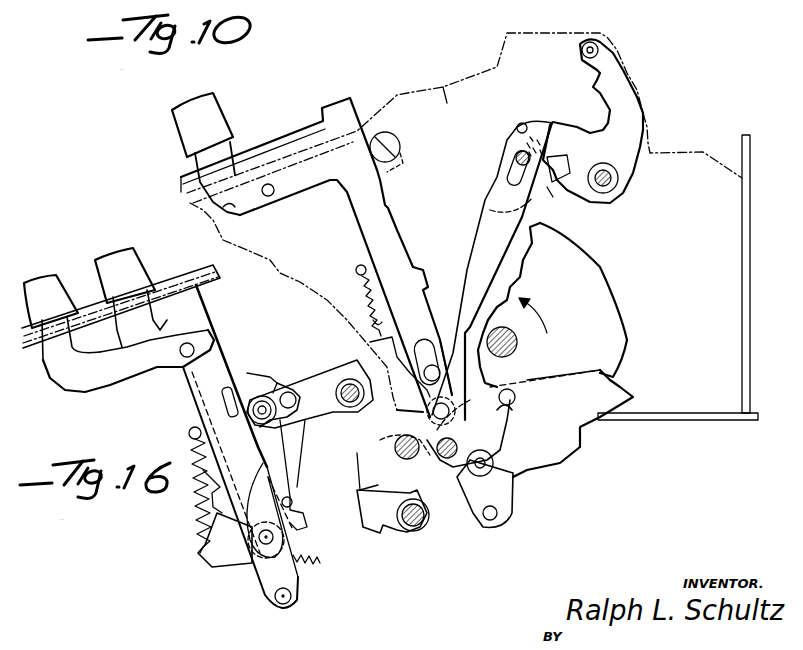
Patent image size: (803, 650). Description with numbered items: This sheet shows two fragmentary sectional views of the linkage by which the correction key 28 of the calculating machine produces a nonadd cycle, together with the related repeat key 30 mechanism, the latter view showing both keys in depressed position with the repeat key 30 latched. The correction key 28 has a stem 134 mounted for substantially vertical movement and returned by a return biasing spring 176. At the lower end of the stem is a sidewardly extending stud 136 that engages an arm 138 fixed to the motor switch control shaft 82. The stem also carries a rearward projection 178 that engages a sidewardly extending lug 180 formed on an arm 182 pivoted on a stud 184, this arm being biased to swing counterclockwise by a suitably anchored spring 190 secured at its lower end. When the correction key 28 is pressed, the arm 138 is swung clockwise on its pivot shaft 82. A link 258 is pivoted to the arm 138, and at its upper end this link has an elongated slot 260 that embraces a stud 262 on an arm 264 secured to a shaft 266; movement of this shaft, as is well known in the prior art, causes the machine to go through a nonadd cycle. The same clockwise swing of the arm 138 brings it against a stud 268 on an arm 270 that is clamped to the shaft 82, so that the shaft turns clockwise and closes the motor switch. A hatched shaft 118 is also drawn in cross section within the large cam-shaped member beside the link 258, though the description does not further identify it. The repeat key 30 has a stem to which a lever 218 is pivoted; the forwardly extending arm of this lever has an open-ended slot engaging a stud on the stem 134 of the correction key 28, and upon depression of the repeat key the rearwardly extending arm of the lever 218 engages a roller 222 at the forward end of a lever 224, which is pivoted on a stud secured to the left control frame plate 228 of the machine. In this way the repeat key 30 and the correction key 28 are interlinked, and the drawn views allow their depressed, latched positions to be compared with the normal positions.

In FIG. 10, the correction key 28 is at (215, 110).
In FIG. 16, the correction key 28 is at (50, 283).
In FIG. 16, the repeat key 30 is at (145, 268).
In FIG. 10, the motor switch control shaft 82 is at (400, 440).
In FIG. 10, the shaft 118 is at (518, 342).
In FIG. 10, the stem 134 is at (420, 265).
In FIG. 10, the stud 136 is at (432, 405).
In FIG. 16, the stud 136 is at (284, 607).
In FIG. 10, the arm 138 is at (500, 431).
In FIG. 10, the return biasing spring 176 is at (354, 270).
In FIG. 16, the return biasing spring 176 is at (207, 470).
In FIG. 10, the rearward projection 178 is at (415, 266).
In FIG. 16, the rearward projection 178 is at (292, 463).
In FIG. 16, the lug 180 is at (298, 386).
In FIG. 16, the arm 182 is at (289, 491).
In FIG. 16, the stud 184 is at (245, 565).
In FIG. 16, the spring 190 is at (314, 566).
In FIG. 16, the lever 218 is at (270, 381).
In FIG. 16, the roller 222 is at (268, 398).
In FIG. 16, the lever 224 is at (318, 385).
In FIG. 10, the left control frame plate 228 is at (500, 43).
In FIG. 10, the link 258 is at (533, 218).
In FIG. 10, the elongated slot 260 is at (513, 165).
In FIG. 10, the stud 262 is at (515, 125).
In FIG. 10, the arm 264 is at (565, 130).
In FIG. 10, the shaft 266 is at (618, 179).
In FIG. 10, the stud 268 is at (486, 528).
In FIG. 10, the arm 270 is at (426, 526).